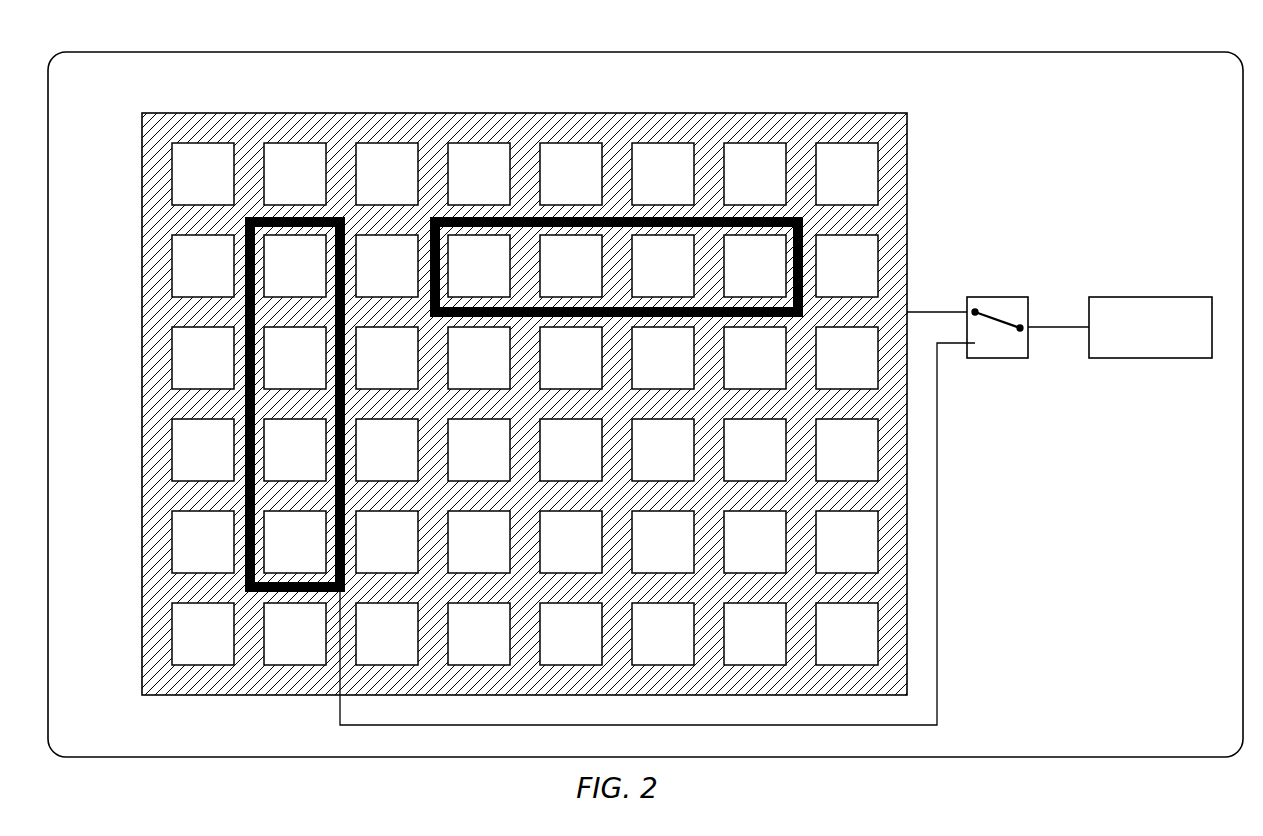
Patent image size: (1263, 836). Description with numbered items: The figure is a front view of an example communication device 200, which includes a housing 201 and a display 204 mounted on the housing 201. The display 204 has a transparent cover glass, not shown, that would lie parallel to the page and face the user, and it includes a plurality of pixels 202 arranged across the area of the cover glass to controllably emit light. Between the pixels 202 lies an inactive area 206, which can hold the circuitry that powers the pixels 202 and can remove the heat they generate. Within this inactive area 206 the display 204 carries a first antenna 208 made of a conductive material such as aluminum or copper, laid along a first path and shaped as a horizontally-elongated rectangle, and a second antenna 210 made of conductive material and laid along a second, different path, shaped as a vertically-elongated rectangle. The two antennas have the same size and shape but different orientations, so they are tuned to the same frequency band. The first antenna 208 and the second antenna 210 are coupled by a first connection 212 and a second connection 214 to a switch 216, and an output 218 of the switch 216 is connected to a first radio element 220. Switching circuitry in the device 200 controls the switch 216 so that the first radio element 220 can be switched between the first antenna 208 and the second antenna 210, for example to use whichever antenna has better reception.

The communication device 200 is at (285, 34).
The housing 201 is at (1072, 54).
The pixels 202 is at (864, 187).
The display 204 is at (204, 112).
The inactive area 206 is at (155, 216).
The first antenna 208 is at (612, 216).
The second antenna 210 is at (245, 316).
The first connection 212 is at (939, 311).
The second connection 214 is at (940, 392).
The switch 216 is at (999, 297).
The output 218 is at (1059, 323).
The first radio element 220 is at (1152, 297).